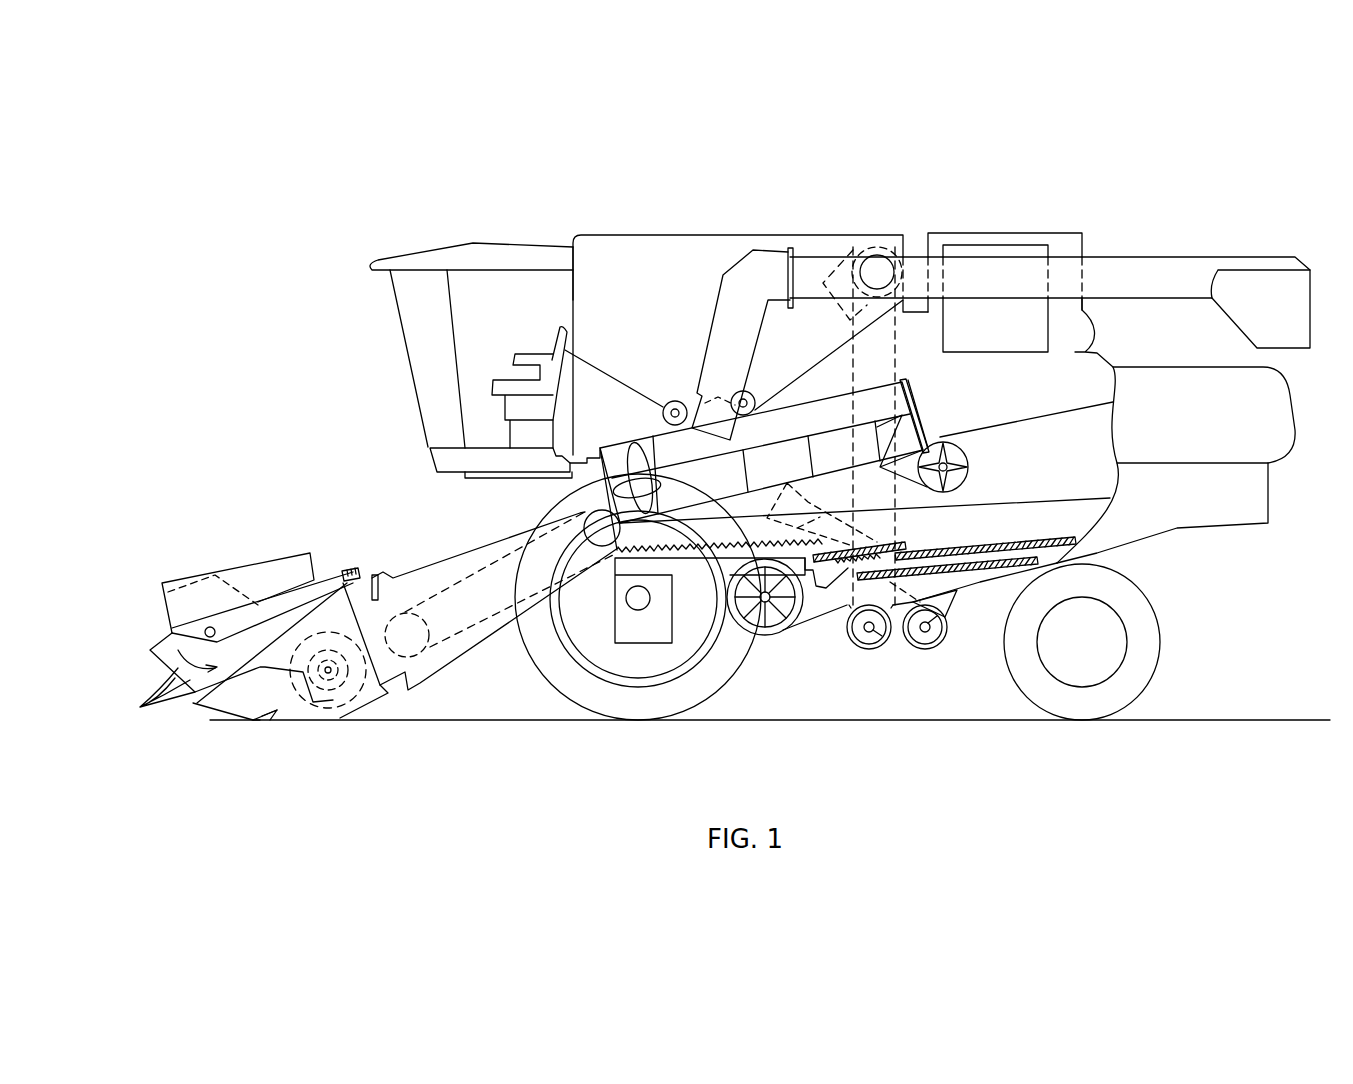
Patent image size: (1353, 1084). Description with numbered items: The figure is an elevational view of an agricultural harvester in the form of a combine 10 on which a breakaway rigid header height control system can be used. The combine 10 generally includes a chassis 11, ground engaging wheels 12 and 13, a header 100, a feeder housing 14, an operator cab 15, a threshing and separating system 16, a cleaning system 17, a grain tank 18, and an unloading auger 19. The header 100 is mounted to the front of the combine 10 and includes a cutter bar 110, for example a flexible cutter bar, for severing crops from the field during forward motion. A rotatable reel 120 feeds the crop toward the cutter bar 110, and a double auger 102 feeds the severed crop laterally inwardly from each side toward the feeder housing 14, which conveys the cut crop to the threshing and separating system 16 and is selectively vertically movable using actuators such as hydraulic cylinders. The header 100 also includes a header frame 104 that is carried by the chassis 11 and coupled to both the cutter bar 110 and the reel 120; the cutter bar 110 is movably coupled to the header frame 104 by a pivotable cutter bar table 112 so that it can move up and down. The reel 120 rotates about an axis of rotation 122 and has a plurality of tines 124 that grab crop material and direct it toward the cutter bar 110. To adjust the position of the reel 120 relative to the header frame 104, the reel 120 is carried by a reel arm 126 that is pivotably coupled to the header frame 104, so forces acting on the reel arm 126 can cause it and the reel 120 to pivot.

The combine 10 is at (455, 233).
The chassis 11 is at (1085, 563).
The ground engaging wheel 12 is at (557, 687).
The ground engaging wheel 13 is at (1153, 657).
The feeder housing 14 is at (418, 575).
The operator cab 15 is at (403, 340).
The threshing and separating system 16 is at (555, 488).
The cleaning system 17 is at (831, 637).
The grain tank 18 is at (622, 245).
The unloading auger 19 is at (1172, 268).
The header 100 is at (246, 629).
The double auger 102 is at (322, 690).
The header frame 104 is at (377, 690).
The cutter bar 110 is at (260, 719).
The cutter bar table 112 is at (270, 720).
The reel 120 is at (152, 625).
The axis of rotation 122 is at (210, 627).
The tines 124 is at (125, 705).
The reel arm 126 is at (350, 568).